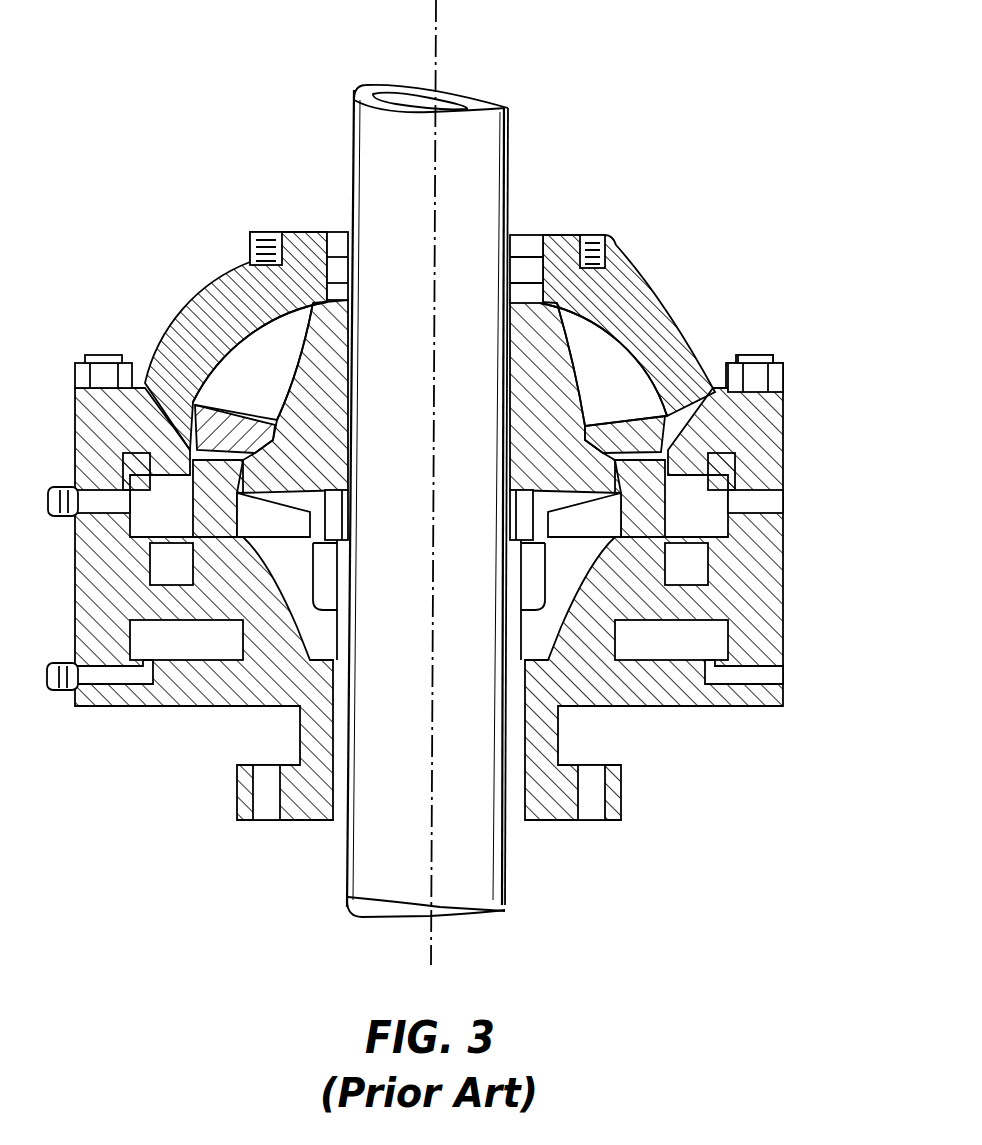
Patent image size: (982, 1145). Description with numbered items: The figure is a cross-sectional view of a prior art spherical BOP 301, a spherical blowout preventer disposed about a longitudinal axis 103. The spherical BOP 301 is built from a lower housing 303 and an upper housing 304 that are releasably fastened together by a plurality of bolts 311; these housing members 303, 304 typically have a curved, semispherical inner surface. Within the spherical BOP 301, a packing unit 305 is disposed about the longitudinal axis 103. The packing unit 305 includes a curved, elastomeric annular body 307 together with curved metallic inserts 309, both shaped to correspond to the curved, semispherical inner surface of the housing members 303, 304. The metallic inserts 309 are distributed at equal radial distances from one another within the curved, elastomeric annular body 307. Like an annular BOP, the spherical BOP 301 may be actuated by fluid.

The longitudinal axis 103 is at (448, 38).
The spherical BOP 301 is at (471, 482).
The lower housing 303 is at (785, 597).
The upper housing 304 is at (675, 337).
The packing unit 305 is at (598, 300).
The curved, elastomeric annular body 307 is at (533, 282).
The curved metallic inserts 309 is at (600, 363).
The bolts 311 is at (787, 378).